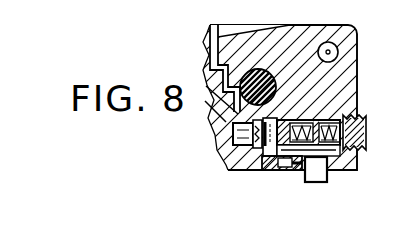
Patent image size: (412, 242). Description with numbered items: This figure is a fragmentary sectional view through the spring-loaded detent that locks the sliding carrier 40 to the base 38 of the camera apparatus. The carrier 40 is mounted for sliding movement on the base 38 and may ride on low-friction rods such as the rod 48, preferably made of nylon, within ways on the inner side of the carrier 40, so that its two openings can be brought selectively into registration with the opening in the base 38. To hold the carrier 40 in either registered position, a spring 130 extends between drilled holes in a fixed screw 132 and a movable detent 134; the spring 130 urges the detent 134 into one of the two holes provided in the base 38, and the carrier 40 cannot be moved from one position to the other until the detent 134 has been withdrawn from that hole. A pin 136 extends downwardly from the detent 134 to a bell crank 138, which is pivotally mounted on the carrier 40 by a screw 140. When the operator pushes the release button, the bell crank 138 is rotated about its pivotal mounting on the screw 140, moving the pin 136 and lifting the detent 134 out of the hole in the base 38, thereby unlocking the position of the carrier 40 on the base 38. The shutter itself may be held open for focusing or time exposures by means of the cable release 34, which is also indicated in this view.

The cable release 34 is at (328, 50).
The base 38 is at (222, 118).
The carrier 40 is at (357, 57).
The rod 48 is at (278, 70).
The spring 130 is at (313, 119).
The fixed screw 132 is at (366, 121).
The detent 134 is at (232, 148).
The pin 136 is at (264, 170).
The bell crank 138 is at (323, 176).
The screw 140 is at (270, 168).